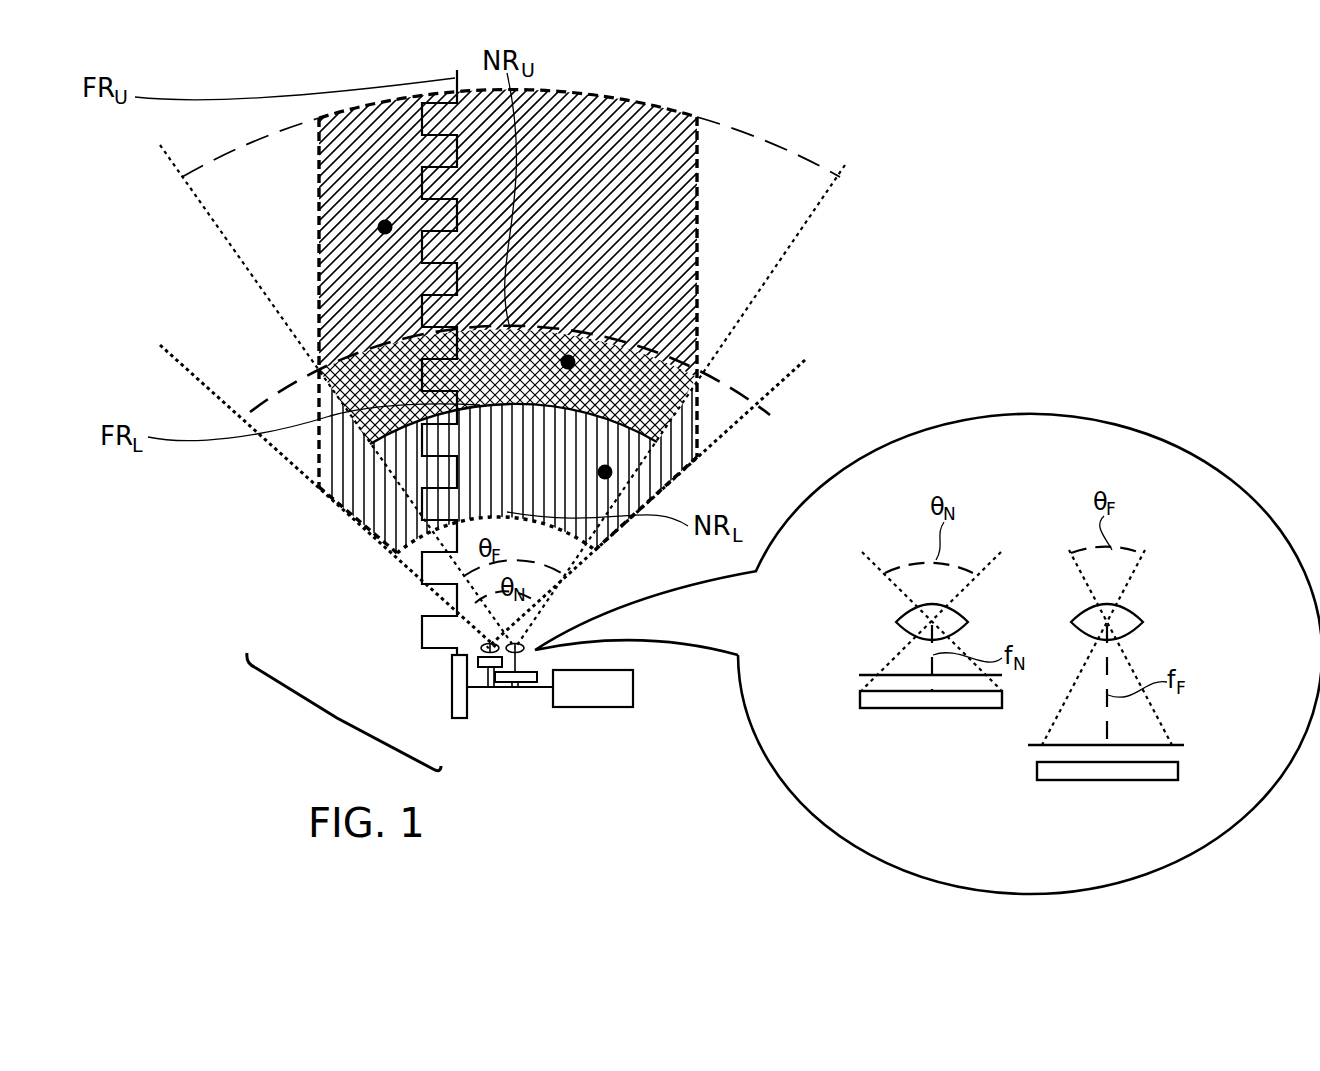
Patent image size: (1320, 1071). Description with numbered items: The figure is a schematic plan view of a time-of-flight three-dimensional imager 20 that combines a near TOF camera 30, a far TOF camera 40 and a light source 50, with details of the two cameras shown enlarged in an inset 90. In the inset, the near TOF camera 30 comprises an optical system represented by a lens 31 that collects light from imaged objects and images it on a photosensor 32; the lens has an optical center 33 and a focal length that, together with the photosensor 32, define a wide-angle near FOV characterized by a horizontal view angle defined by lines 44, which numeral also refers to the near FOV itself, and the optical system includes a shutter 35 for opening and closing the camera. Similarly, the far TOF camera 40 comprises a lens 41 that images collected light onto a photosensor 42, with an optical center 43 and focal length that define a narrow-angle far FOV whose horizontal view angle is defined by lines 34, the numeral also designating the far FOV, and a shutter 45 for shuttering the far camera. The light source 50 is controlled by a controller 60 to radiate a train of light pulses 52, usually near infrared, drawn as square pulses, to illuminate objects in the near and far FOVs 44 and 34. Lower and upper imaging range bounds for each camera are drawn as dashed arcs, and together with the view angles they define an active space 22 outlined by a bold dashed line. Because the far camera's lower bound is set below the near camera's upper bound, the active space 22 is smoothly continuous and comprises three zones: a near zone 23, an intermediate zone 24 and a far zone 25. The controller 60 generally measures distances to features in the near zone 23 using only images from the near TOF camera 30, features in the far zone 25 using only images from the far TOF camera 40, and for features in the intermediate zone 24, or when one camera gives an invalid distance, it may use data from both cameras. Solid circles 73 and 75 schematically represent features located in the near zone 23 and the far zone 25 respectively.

The TOF 3D imager 20 is at (337, 718).
The active space 22 is at (697, 167).
The near zone 23 is at (370, 515).
The intermediate zone 24 is at (703, 422).
The far zone 25 is at (673, 212).
The near TOF camera 30 is at (480, 668).
The lens 31 is at (897, 618).
The photosensor 32 is at (909, 709).
The optical center 33 is at (957, 622).
The lines defining view angle θF / far FOV 34 is at (245, 265).
The shutter 35 is at (864, 673).
The far TOF camera 40 is at (533, 683).
The lens 41 is at (1132, 633).
The photosensor 42 is at (1100, 780).
The optical center 43 is at (1112, 621).
The lines defining view angle θN / near FOV 44 is at (178, 363).
The shutter 45 is at (1180, 745).
The light source 50 is at (451, 694).
The light pulses 52 is at (422, 627).
The controller 60 is at (610, 701).
The feature in near zone 73 is at (612, 470).
The feature in far zone 75 is at (385, 227).
The inset 90 is at (778, 775).